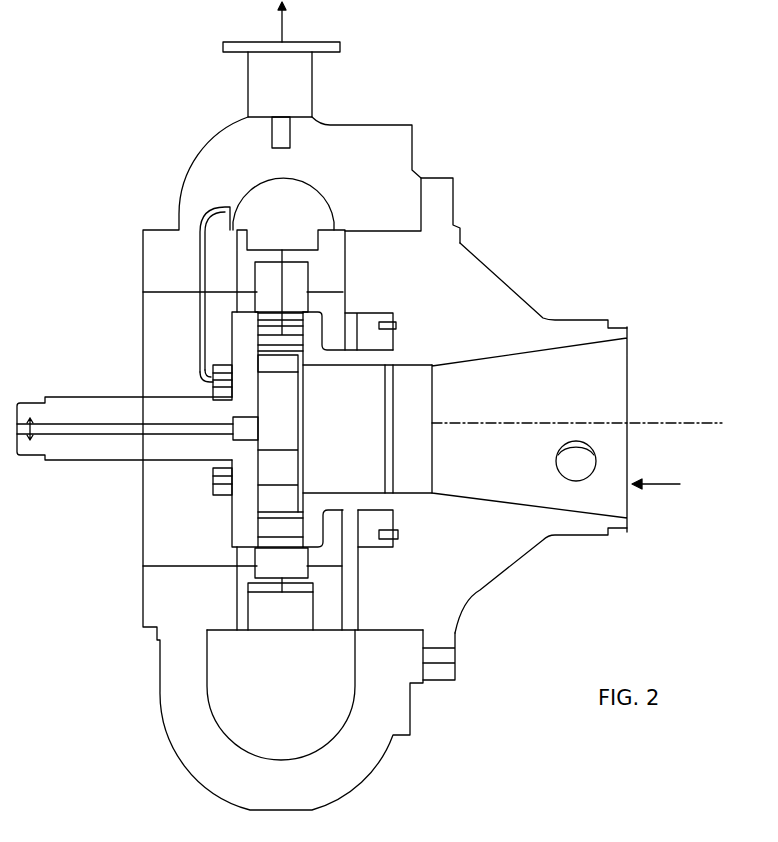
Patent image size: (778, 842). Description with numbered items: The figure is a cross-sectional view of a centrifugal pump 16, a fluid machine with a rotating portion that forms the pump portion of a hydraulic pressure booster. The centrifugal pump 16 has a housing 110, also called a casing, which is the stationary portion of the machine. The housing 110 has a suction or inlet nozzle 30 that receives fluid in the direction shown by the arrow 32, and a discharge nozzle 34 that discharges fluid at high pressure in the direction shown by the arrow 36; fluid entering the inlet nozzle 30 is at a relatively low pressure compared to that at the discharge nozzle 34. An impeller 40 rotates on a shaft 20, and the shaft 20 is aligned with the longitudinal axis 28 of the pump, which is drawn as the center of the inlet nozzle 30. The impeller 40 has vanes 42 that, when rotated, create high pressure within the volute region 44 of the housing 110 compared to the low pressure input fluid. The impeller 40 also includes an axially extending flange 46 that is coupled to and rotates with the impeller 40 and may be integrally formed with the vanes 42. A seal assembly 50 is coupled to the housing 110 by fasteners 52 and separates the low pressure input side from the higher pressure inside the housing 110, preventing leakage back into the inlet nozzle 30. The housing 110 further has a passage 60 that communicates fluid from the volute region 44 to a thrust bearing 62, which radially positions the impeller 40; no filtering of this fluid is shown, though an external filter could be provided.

The centrifugal pump 16 is at (588, 119).
The shaft 20 is at (48, 397).
The longitudinal axis 28 is at (688, 423).
The inlet nozzle 30 is at (628, 362).
The arrow 32 is at (669, 485).
The discharge nozzle 34 is at (248, 80).
The arrow 36 is at (282, 21).
The impeller 40 is at (232, 335).
The vanes 42 is at (240, 350).
The volute region 44 is at (245, 195).
The axially extending flange 46 is at (390, 356).
The seal assembly 50 is at (395, 332).
The fasteners 52 is at (398, 320).
The passage 60 is at (213, 378).
The thrust bearing 62 is at (213, 395).
The housing 110 is at (500, 285).